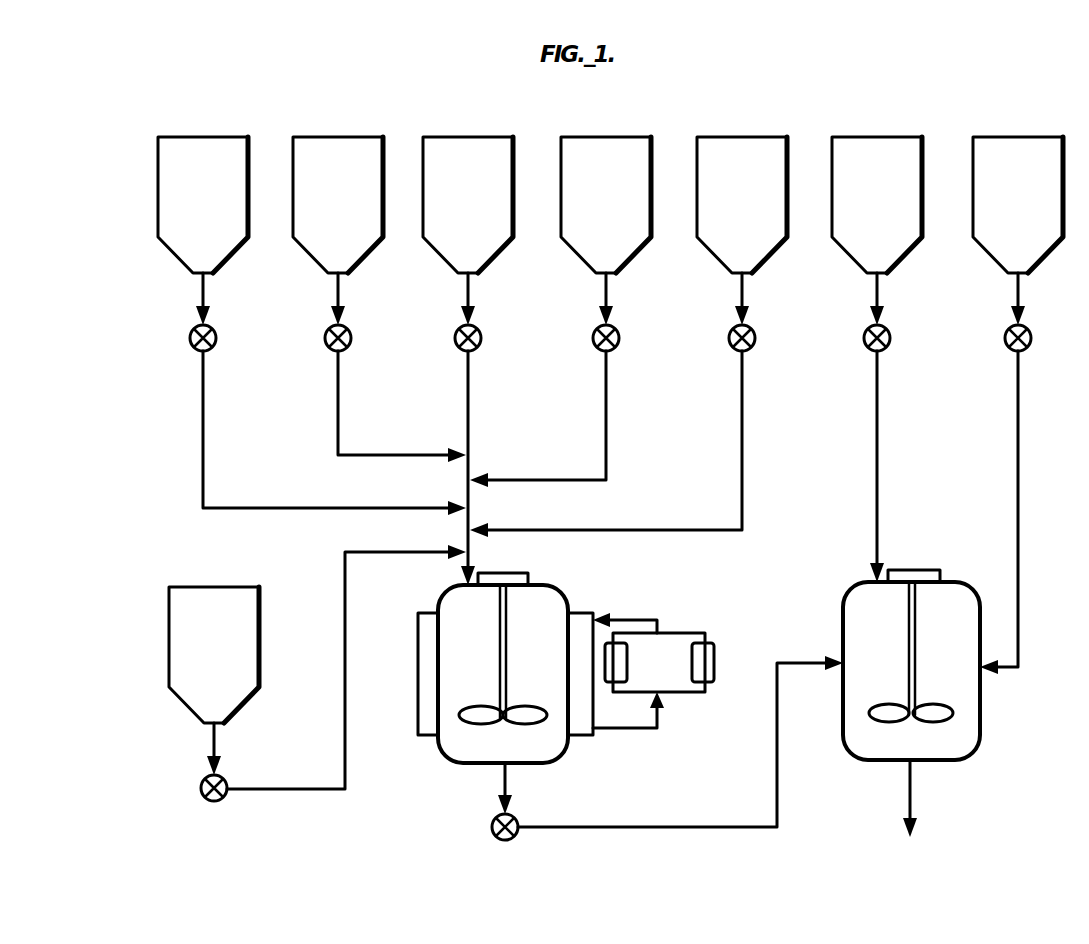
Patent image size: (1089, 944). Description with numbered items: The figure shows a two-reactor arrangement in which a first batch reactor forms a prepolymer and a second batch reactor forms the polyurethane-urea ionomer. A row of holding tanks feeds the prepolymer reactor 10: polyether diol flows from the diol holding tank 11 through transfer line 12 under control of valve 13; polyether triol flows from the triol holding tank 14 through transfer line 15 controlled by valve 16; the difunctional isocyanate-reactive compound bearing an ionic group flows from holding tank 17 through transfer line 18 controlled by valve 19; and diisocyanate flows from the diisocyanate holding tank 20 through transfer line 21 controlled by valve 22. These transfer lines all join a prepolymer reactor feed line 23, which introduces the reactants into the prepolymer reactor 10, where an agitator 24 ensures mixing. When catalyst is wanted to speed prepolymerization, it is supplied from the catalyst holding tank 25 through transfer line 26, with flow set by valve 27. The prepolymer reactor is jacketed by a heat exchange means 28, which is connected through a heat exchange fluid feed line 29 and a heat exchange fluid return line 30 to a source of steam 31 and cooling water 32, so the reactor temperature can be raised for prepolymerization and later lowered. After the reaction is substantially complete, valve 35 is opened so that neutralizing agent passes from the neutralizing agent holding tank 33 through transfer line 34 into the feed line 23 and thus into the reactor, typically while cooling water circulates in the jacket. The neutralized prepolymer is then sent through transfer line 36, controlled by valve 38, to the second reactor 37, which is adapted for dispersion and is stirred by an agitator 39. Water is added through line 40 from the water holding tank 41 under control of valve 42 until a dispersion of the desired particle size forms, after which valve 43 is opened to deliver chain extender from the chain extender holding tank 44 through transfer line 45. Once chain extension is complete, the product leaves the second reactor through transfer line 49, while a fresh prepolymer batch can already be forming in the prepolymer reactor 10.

The prepolymer reactor 10 is at (420, 802).
The diol holding tank 11 is at (232, 137).
The transfer line 12 is at (205, 300).
The valve 13 is at (212, 329).
The triol holding tank 14 is at (367, 137).
The transfer line 15 is at (338, 407).
The valve 16 is at (347, 329).
The holding tank 17 is at (497, 137).
The transfer line 18 is at (468, 407).
The valve 19 is at (477, 329).
The diisocyanate holding tank 20 is at (771, 137).
The transfer line 21 is at (744, 300).
The valve 22 is at (751, 329).
The prepolymer reactor feed line 23 is at (470, 527).
The agitator 24 is at (455, 735).
The catalyst holding tank 25 is at (241, 587).
The transfer line 26 is at (345, 592).
The valve 27 is at (223, 779).
The heat exchange means 28 is at (418, 660).
The heat exchange fluid feed line 29 is at (633, 620).
The heat exchange fluid return line 30 is at (600, 728).
The source of steam 31 is at (627, 661).
The cooling water 32 is at (713, 655).
The neutralizing agent holding tank 33 is at (635, 137).
The transfer line 34 is at (606, 407).
The valve 35 is at (615, 329).
The transfer line 36 is at (636, 827).
The second reactor 37 is at (955, 582).
The valve 38 is at (518, 817).
The agitator 39 is at (920, 705).
The line 40 is at (877, 407).
The water holding tank 41 is at (906, 137).
The valve 42 is at (886, 329).
The valve 43 is at (1027, 329).
The chain extender holding tank 44 is at (1047, 137).
The transfer line 45 is at (1019, 407).
The transfer line 49 is at (912, 797).